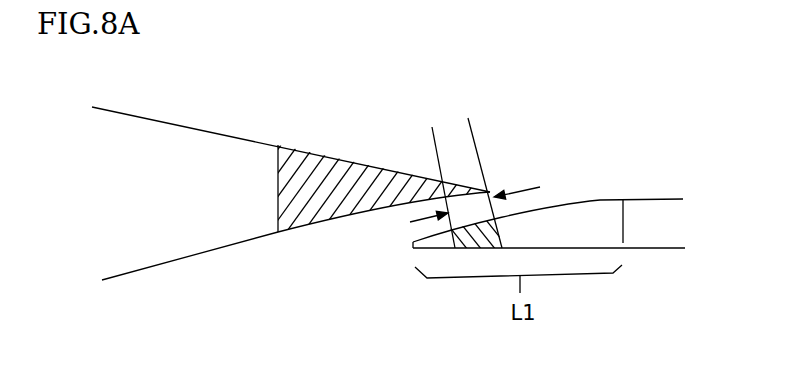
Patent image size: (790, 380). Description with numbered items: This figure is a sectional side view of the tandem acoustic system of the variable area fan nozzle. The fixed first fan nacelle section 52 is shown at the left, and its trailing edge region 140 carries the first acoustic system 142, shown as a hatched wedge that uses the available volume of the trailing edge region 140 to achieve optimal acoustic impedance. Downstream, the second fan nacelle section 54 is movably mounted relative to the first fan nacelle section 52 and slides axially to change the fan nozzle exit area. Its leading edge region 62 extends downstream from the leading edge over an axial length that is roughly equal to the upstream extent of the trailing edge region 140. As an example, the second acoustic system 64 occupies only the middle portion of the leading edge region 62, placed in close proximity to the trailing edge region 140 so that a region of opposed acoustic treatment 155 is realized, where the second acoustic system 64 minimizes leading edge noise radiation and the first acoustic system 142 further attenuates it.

The first fan nacelle section 52 is at (228, 119).
The second fan nacelle section 54 is at (650, 262).
The leading edge region 62 is at (588, 193).
The second acoustic system 64 is at (482, 206).
The trailing edge region 140 is at (342, 226).
The first acoustic system 142 is at (322, 168).
The region of opposed acoustic treatment 155 is at (452, 137).